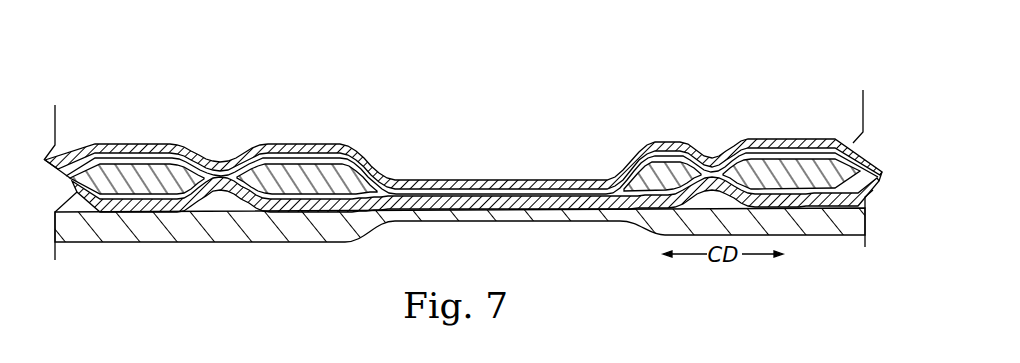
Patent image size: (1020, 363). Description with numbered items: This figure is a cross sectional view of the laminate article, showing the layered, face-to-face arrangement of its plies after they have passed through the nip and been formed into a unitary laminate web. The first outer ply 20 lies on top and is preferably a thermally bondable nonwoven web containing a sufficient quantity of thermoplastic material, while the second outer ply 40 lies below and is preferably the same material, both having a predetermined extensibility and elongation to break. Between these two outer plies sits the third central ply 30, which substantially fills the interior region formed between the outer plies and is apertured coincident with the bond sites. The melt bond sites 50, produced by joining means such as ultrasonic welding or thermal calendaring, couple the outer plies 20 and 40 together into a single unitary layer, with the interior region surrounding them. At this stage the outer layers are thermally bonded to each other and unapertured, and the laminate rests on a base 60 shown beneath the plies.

The first outer ply 20 is at (515, 182).
The third central ply 30 is at (316, 172).
The second outer ply 40 is at (810, 199).
The melt bond sites 50 is at (220, 148).
The base substrate 60 is at (212, 242).